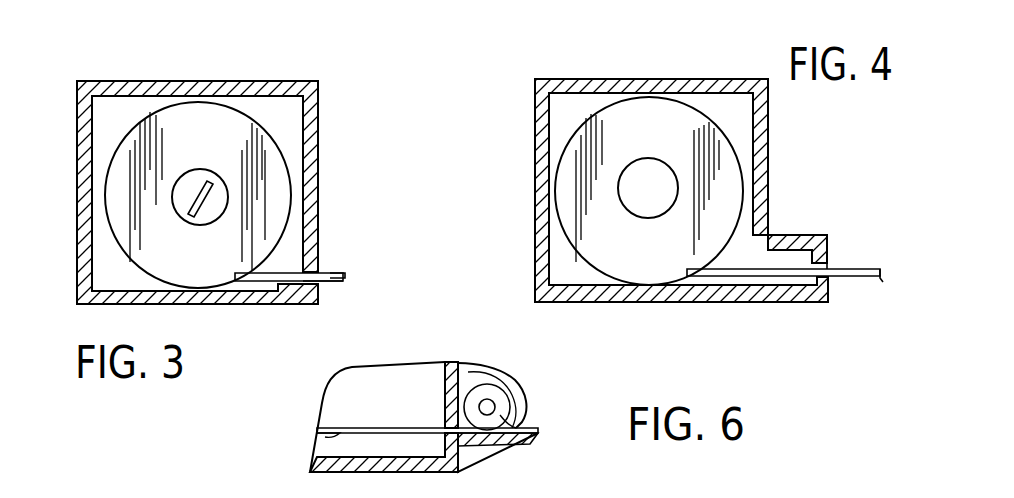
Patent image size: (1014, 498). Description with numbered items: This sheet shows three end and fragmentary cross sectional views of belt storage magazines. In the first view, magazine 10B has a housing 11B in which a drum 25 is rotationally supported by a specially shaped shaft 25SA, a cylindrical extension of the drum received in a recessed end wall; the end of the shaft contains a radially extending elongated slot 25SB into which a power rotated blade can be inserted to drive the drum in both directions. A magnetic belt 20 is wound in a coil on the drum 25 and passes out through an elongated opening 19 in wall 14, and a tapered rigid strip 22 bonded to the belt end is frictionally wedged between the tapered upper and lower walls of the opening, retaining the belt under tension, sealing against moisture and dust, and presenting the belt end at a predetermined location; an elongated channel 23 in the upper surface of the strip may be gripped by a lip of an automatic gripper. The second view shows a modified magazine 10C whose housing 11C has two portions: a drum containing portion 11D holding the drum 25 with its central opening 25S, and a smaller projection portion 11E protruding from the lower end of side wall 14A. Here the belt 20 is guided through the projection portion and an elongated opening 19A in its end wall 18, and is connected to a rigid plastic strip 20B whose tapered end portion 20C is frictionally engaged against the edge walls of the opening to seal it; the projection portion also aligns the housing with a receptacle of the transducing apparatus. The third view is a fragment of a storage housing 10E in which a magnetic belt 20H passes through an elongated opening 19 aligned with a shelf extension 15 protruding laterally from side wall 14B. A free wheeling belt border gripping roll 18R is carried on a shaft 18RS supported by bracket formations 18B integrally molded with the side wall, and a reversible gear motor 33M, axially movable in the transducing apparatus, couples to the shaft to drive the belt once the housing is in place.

In FIG. 3, the magazine 10B is at (70, 79).
In FIG. 4, the magazine 10C is at (505, 138).
In FIG. 6, the storage housing 10E is at (320, 402).
In FIG. 3, the housing 11B is at (144, 88).
In FIG. 4, the housing 11C is at (534, 184).
In FIG. 4, the drum containing portion 11D is at (702, 80).
In FIG. 4, the projection portion 11E is at (792, 235).
In FIG. 3, the wall 14 is at (318, 152).
In FIG. 4, the side wall 14A is at (769, 146).
In FIG. 6, the side wall 14B is at (451, 362).
In FIG. 6, the shelf extension 15 is at (531, 445).
In FIG. 4, the end wall 18 is at (818, 249).
In FIG. 6, the bracket formation 18B is at (506, 392).
In FIG. 6, the belt border gripping roll 18R is at (500, 416).
In FIG. 6, the shaft 18RS is at (494, 407).
In FIG. 3, the elongated opening 19 is at (318, 270).
In FIG. 6, the elongated opening 19 is at (440, 428).
In FIG. 4, the elongated opening 19A is at (838, 278).
In FIG. 3, the magnetic belt 20 is at (250, 291).
In FIG. 4, the magnetic belt 20 is at (782, 277).
In FIG. 4, the rigid plastic strip 20B is at (881, 270).
In FIG. 4, the tapered end portion 20C is at (836, 258).
In FIG. 6, the magnetic belt 20H is at (338, 437).
In FIG. 3, the rigid strip 22 is at (320, 282).
In FIG. 3, the elongated channel 23 is at (340, 275).
In FIG. 3, the drum 25 is at (263, 123).
In FIG. 4, the drum 25 is at (600, 113).
In FIG. 4, the central hole 25S is at (641, 159).
In FIG. 3, the shaft 25SA is at (172, 200).
In FIG. 3, the slot 25SB is at (200, 172).
In FIG. 6, the reversible gear motor 33M is at (518, 372).